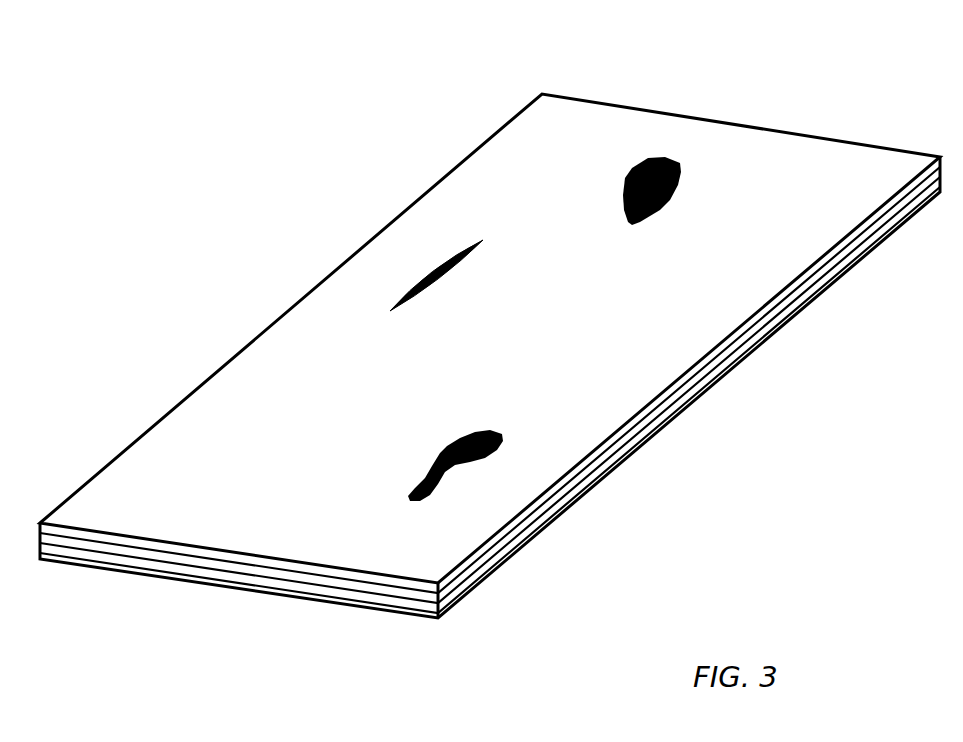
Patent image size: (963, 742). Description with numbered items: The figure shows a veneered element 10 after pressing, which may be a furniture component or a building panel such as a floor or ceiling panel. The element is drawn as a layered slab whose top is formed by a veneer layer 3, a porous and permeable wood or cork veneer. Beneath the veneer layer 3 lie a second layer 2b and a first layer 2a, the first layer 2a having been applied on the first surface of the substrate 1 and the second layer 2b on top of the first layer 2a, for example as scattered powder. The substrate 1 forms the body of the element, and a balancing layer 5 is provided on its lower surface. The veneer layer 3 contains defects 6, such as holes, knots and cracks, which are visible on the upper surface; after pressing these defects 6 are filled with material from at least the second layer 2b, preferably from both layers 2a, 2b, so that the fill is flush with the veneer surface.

The veneered element 10 is at (490, 391).
The veneer layer 3 is at (708, 318).
The first layer 2a is at (143, 547).
The second layer 2b is at (241, 560).
The substrate 1 is at (367, 592).
The balancing layer 5 is at (318, 596).
The defects 6 is at (448, 267).